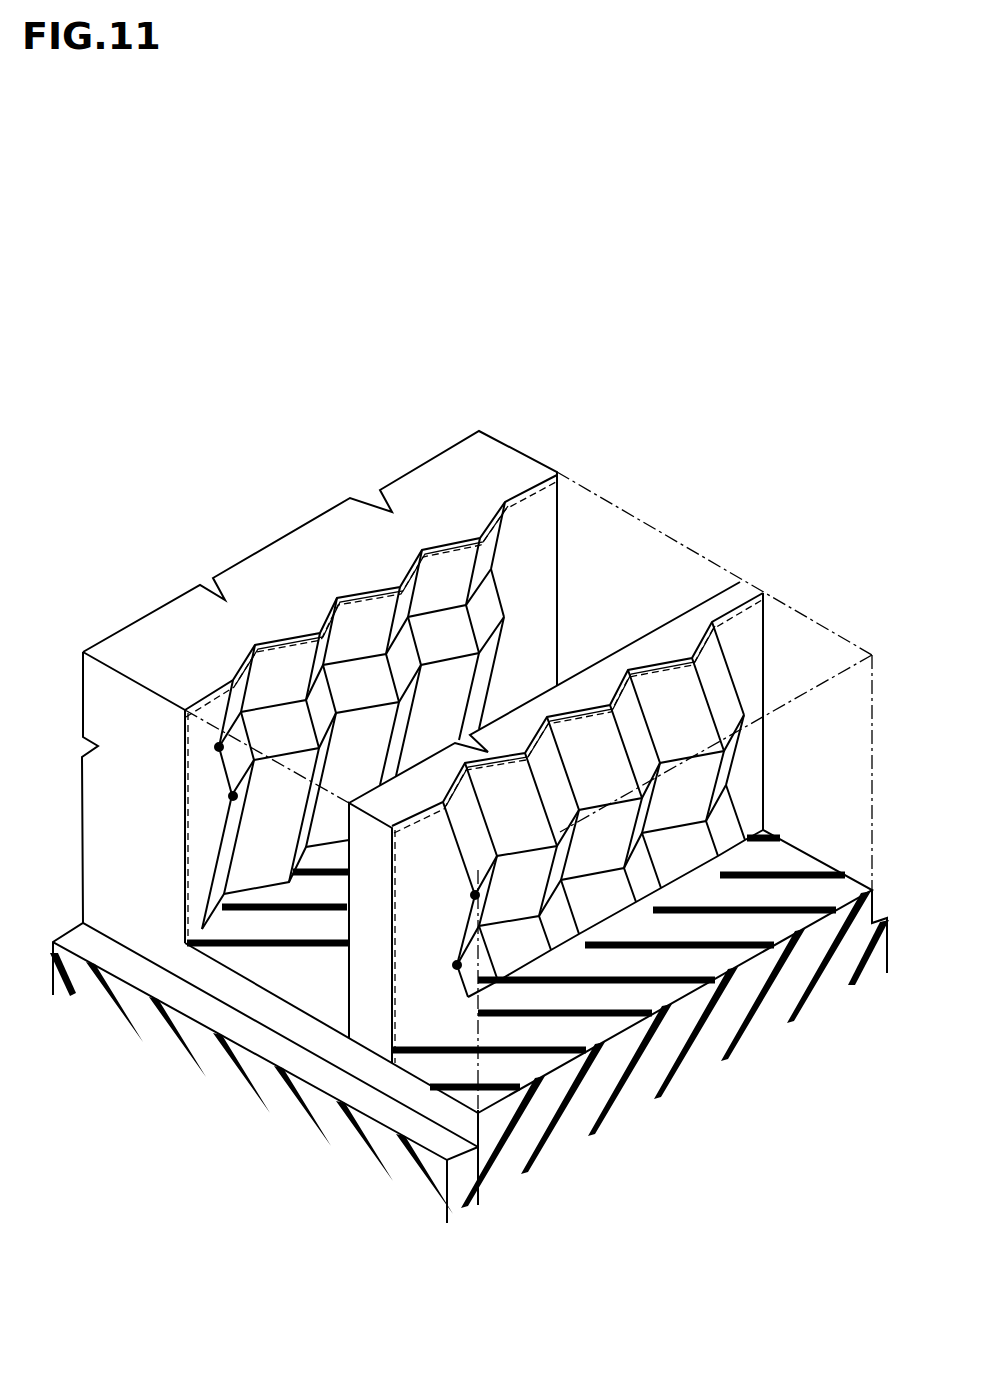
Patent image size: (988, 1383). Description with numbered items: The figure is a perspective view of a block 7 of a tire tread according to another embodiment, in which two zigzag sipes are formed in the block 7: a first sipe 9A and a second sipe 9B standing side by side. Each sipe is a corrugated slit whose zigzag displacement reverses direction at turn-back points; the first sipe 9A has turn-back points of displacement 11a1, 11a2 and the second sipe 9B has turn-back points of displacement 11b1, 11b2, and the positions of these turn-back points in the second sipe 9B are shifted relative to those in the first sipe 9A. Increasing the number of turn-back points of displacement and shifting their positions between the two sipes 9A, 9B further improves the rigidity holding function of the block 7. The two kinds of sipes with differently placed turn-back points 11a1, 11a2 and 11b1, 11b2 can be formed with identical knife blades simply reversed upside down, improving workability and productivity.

The block 7 is at (463, 443).
The first sipe 9A is at (488, 553).
The second sipe 9B is at (717, 675).
The turn-back point of displacement 11a1 is at (218, 747).
The turn-back point of displacement 11a2 is at (233, 796).
The turn-back point of displacement 11b1 is at (475, 895).
The turn-back point of displacement 11b2 is at (457, 965).